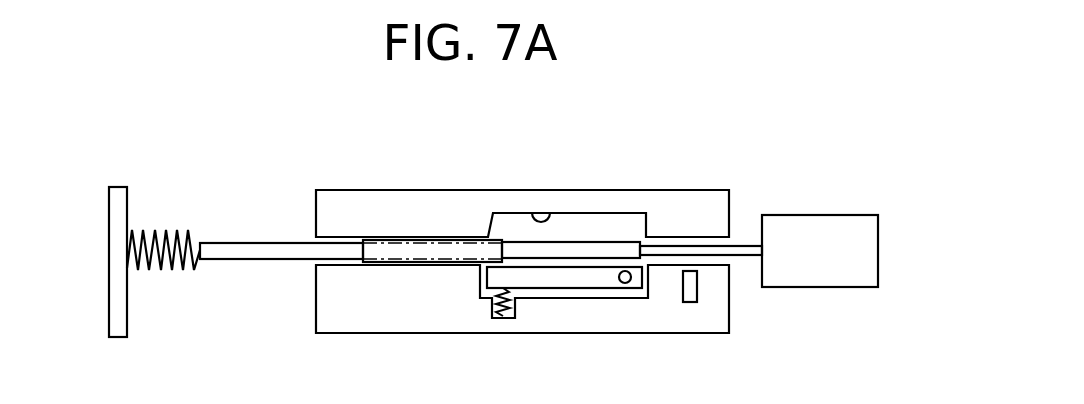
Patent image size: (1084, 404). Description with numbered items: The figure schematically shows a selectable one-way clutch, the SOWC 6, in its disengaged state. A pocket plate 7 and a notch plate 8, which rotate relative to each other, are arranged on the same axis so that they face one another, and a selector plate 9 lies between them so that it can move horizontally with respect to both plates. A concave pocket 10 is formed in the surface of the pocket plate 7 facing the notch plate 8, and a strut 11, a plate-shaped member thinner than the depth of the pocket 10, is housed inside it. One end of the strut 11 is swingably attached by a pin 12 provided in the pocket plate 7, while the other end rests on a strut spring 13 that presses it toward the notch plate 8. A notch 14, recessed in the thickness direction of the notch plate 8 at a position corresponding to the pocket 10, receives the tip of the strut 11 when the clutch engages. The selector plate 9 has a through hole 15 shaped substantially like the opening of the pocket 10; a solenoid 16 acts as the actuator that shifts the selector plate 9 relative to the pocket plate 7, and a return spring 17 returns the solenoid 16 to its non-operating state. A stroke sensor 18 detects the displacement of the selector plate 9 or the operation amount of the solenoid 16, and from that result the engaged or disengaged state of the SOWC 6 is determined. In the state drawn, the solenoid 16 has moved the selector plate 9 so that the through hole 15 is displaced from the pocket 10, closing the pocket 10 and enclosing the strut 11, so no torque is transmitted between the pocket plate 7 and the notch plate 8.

The SOWC 6 is at (703, 152).
The pocket plate 7 is at (428, 320).
The notch plate 8 is at (505, 203).
The selector plate 9 is at (580, 242).
The pocket 10 is at (583, 298).
The strut 11 is at (543, 289).
The pin 12 is at (625, 284).
The strut spring 13 is at (507, 320).
The notch 14 is at (548, 222).
The through hole 15 is at (480, 246).
The solenoid 16 is at (802, 288).
The return spring 17 is at (174, 231).
The stroke sensor 18 is at (688, 303).